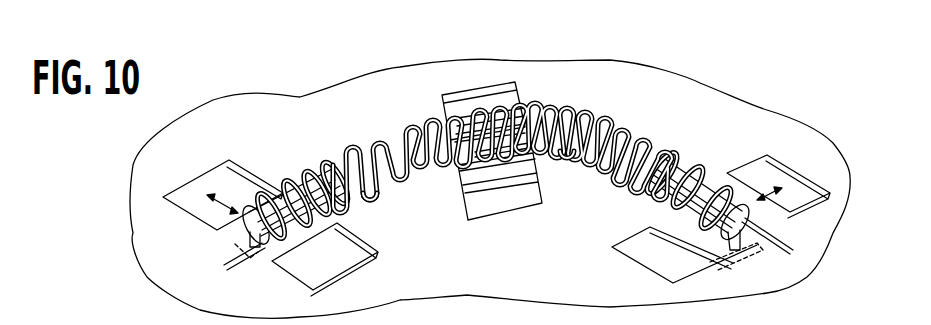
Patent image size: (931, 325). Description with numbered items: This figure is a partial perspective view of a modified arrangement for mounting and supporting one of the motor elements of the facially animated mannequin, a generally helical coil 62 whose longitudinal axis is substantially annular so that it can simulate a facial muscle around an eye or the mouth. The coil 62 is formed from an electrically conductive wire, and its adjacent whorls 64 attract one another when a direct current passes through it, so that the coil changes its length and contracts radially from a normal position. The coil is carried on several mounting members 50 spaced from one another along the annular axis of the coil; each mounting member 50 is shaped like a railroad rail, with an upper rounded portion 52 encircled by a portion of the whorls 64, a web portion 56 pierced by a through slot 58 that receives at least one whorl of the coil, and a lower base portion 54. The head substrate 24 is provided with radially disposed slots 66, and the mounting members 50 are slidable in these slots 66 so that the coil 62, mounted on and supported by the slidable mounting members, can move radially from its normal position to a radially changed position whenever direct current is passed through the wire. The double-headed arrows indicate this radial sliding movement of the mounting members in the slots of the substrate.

The head substrate 24 is at (483, 282).
The mounting member 50 is at (216, 184).
The upper rounded portion 52 is at (247, 180).
The base portion 54 is at (268, 263).
The web portion 56 is at (253, 253).
The through slot 58 is at (255, 222).
The helical coil 62 is at (349, 128).
The whorls 64 is at (400, 138).
The slot 66 is at (370, 200).